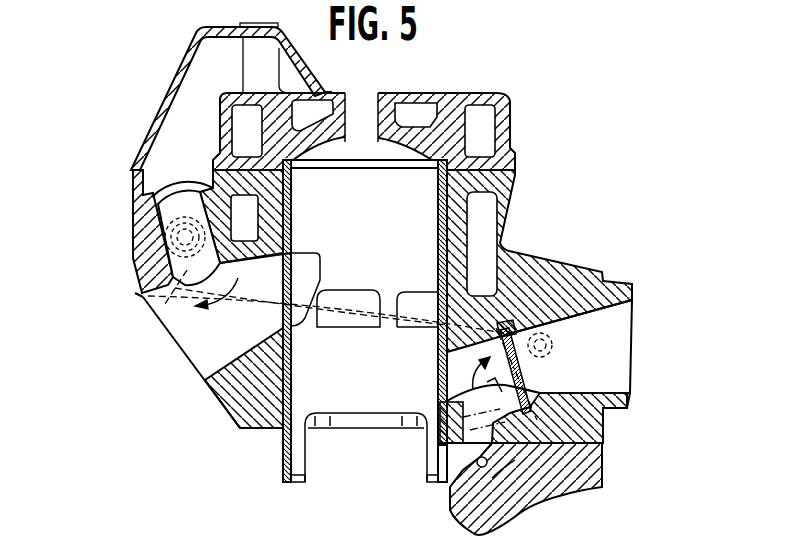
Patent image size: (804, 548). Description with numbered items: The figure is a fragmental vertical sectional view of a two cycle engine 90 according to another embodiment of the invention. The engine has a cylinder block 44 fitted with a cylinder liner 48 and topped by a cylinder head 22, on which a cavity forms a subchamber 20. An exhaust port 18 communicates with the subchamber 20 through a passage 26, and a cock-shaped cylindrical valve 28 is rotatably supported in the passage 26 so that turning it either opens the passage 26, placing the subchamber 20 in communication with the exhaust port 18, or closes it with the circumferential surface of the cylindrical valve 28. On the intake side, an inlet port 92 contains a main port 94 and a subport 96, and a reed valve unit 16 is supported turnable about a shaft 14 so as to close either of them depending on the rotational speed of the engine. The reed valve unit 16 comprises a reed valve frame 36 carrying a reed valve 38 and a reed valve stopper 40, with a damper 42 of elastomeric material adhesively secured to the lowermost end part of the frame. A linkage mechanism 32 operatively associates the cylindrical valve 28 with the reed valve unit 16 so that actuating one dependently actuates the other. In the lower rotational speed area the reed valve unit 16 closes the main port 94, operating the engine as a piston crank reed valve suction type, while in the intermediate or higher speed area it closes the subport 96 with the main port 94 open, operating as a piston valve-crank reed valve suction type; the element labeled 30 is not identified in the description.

The shaft 14 is at (578, 438).
The reed valve unit 16 is at (606, 410).
The exhaust port 18 is at (223, 367).
The subchamber 20 is at (163, 142).
The cylinder head 22 is at (437, 100).
The passage 26 is at (153, 195).
The cylindrical valve 28 is at (141, 260).
The housing wall 30 is at (140, 225).
The linkage mechanism 32 is at (365, 321).
The reed valve frame 36 is at (520, 382).
The reed valve 38 is at (512, 350).
The reed valve stopper 40 is at (447, 401).
The damper 42 is at (517, 332).
The cylinder block 44 is at (528, 260).
The cylinder liner 48 is at (287, 392).
The two cycle engine 90 is at (527, 144).
The inlet port 92 is at (617, 341).
The main port 94 is at (631, 386).
The subport 96 is at (497, 493).